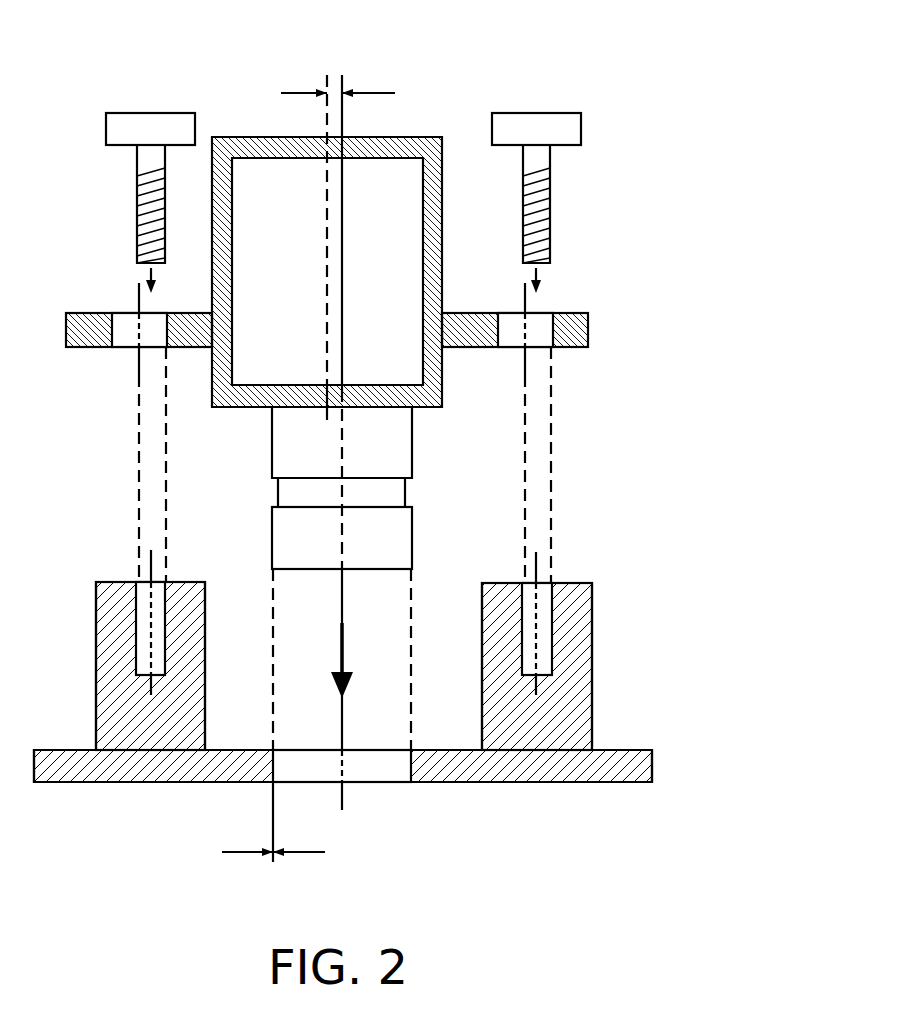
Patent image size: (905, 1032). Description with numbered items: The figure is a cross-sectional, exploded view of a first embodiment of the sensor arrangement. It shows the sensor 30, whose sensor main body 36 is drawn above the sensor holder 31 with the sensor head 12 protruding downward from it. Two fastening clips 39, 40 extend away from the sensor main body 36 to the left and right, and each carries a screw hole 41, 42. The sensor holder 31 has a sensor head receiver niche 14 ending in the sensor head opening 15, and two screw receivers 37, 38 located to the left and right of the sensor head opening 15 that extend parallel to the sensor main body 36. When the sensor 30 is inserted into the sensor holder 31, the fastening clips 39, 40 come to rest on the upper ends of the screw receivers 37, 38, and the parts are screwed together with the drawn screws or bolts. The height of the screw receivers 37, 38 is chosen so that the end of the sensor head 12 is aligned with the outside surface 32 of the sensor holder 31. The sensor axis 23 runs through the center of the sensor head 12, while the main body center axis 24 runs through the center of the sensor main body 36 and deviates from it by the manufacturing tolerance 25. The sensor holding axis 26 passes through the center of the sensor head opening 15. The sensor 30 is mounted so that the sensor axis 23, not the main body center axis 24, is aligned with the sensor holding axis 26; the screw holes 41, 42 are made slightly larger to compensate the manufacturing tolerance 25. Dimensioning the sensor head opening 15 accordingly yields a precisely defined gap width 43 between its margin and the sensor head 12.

The sensor 30 is at (491, 73).
The sensor main body 36 is at (436, 137).
The sensor head 12 is at (272, 506).
The sensor axis 23 is at (345, 527).
The main body center axis 24 is at (325, 254).
The manufacturing tolerance 25 is at (338, 310).
The fastening clip 39 is at (135, 308).
The fastening clip 40 is at (519, 307).
The screw hole 41 is at (112, 313).
The screw hole 42 is at (498, 313).
The sensor holder 31 is at (343, 721).
The screw receiver 37 is at (107, 672).
The screw receiver 38 is at (580, 692).
The outside surface 32 is at (511, 790).
The sensor holding axis 26 is at (345, 764).
The sensor head receiver niche 14 is at (256, 602).
The sensor head opening 15 is at (364, 716).
The gap width 43 is at (273, 837).